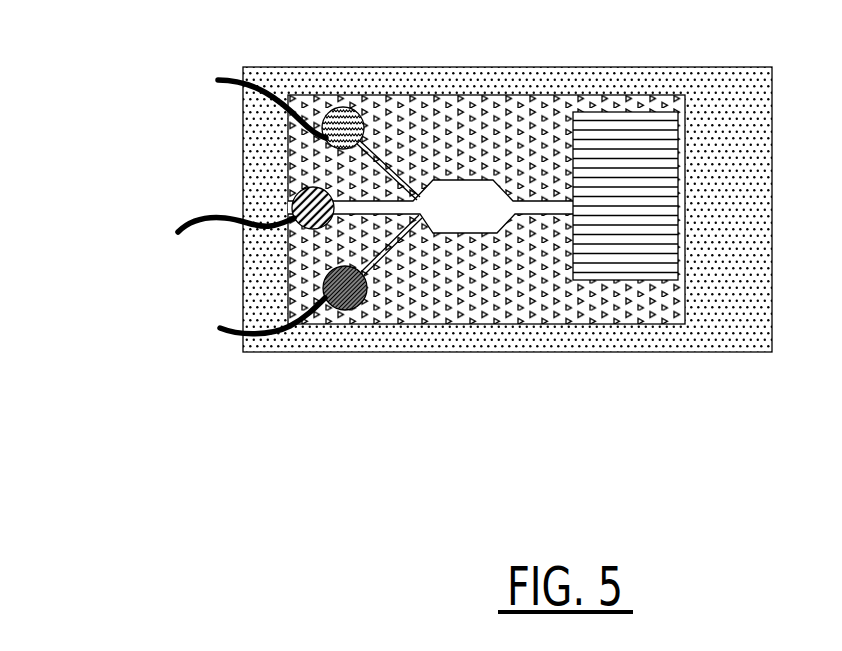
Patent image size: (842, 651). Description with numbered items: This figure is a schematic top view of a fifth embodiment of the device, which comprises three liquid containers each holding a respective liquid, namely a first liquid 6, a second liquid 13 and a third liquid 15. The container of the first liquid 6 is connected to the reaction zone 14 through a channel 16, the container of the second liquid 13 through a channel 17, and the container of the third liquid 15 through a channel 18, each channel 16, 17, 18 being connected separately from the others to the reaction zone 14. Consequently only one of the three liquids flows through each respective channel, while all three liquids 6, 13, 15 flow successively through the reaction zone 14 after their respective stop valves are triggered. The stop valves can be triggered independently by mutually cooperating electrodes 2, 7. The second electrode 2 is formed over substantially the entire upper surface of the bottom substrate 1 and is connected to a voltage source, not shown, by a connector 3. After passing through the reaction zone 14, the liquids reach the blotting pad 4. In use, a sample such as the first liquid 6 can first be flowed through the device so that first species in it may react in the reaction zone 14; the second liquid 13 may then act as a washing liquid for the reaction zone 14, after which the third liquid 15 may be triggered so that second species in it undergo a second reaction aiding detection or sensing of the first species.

The bottom substrate 1 is at (531, 176).
The second electrode 2 is at (531, 176).
The connector 3 is at (752, 167).
The blotting pad 4 is at (640, 117).
The first liquid 6 is at (340, 108).
The electrodes 7 is at (241, 203).
The second liquid 13 is at (297, 197).
The reaction zone 14 is at (473, 225).
The third liquid 15 is at (330, 278).
The channel 16 is at (390, 170).
The channel 17 is at (363, 207).
The channel 18 is at (373, 258).